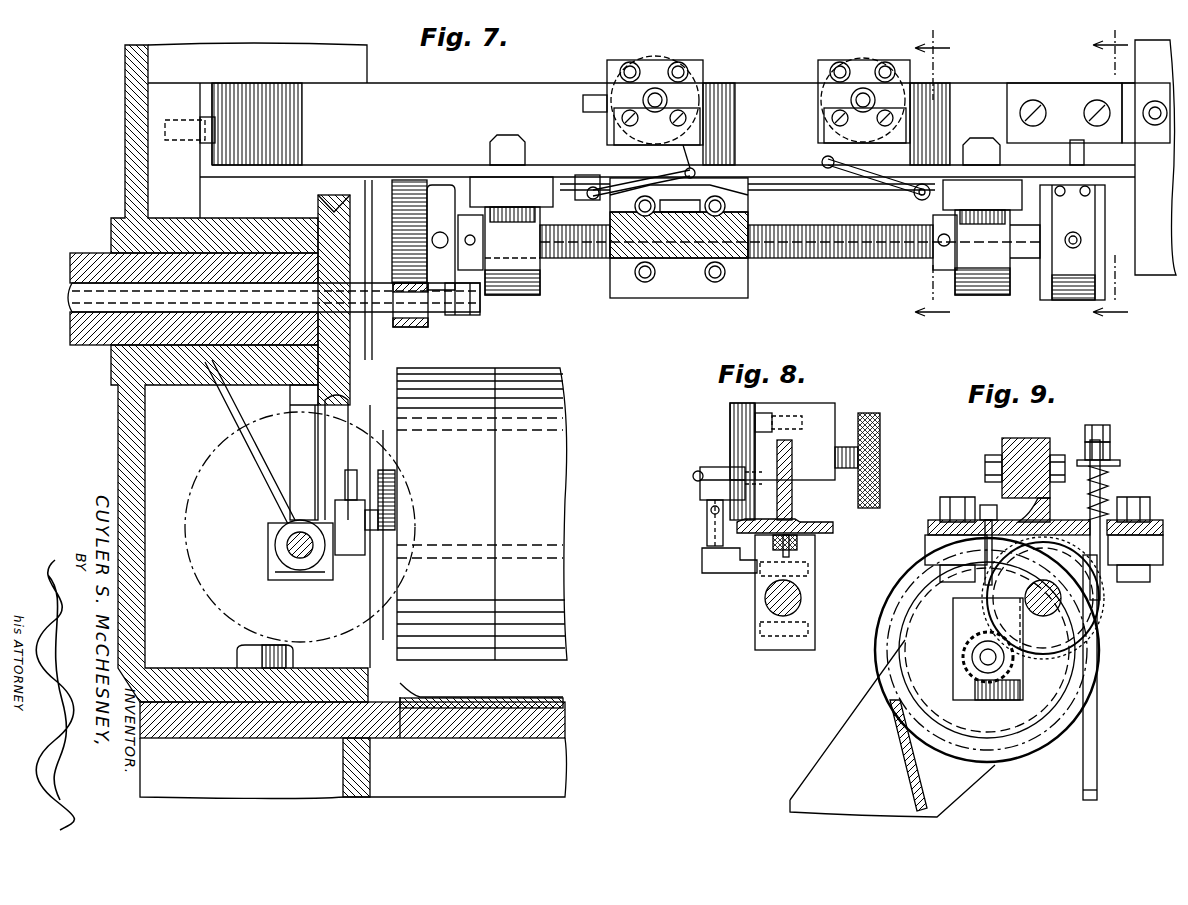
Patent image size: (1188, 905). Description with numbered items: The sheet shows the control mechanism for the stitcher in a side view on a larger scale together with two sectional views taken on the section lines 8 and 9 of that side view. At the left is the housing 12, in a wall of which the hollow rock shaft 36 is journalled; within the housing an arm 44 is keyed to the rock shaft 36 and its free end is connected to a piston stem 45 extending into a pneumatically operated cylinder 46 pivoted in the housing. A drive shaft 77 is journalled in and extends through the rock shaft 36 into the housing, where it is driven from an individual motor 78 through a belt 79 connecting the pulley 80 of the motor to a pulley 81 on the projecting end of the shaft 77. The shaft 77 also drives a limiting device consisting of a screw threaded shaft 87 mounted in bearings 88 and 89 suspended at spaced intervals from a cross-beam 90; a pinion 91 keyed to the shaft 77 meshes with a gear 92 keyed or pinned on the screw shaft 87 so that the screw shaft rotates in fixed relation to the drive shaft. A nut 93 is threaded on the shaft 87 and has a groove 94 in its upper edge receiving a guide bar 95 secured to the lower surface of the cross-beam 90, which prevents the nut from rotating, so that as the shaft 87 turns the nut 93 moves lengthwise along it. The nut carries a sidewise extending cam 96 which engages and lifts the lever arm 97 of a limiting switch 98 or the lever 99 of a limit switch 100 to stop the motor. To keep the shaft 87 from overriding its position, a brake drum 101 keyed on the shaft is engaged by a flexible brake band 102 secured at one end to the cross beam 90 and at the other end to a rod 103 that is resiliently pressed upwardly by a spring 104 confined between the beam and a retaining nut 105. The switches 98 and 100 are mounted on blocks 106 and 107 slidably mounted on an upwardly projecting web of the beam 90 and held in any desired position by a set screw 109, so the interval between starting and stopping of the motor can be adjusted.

In FIG. 7, the housing 12 is at (125, 135).
In FIG. 7, the hollow rock shaft 36 is at (70, 262).
In FIG. 7, the drive shaft 77 is at (70, 294).
In FIG. 9, the drive shaft 77 is at (975, 666).
In FIG. 7, the cross-beam 90 is at (416, 86).
In FIG. 8, the cross-beam 90 is at (838, 502).
In FIG. 9, the cross-beam 90 is at (1047, 440).
In FIG. 7, the pulley 81 is at (320, 402).
In FIG. 9, the pulley 81 is at (1090, 658).
In FIG. 7, the belt 79 is at (330, 434).
In FIG. 9, the belt 79 is at (1095, 722).
In FIG. 7, the gear 92 is at (402, 180).
In FIG. 9, the gear 92 is at (1040, 668).
In FIG. 7, the pinion 91 is at (428, 327).
In FIG. 9, the pinion 91 is at (965, 662).
In FIG. 7, the bearing 88 is at (530, 297).
In FIG. 7, the screw threaded shaft 87 is at (582, 260).
In FIG. 8, the screw threaded shaft 87 is at (765, 598).
In FIG. 7, the nut 93 is at (685, 298).
In FIG. 8, the nut 93 is at (820, 600).
In FIG. 9, the nut 93 is at (963, 630).
In FIG. 7, the cam 96 is at (672, 200).
In FIG. 8, the cam 96 is at (702, 565).
In FIG. 7, the block 107 is at (614, 63).
In FIG. 7, the limit switch 100 is at (648, 100).
In FIG. 7, the limiting switch 98 is at (893, 107).
In FIG. 8, the limiting switch 98 is at (752, 405).
In FIG. 7, the block 106 is at (893, 62).
In FIG. 7, the lever 99 is at (590, 185).
In FIG. 7, the guide bar 95 is at (828, 195).
In FIG. 8, the guide bar 95 is at (800, 540).
In FIG. 7, the lever arm 97 is at (912, 196).
In FIG. 8, the lever arm 97 is at (706, 532).
In FIG. 7, the bearing 89 is at (982, 298).
In FIG. 7, the brake drum 101 is at (1050, 297).
In FIG. 9, the brake drum 101 is at (1085, 598).
In FIG. 7, the flexible brake band 102 is at (1078, 300).
In FIG. 9, the flexible brake band 102 is at (1092, 622).
In FIG. 7, the section line 8— 8 is at (937, 178).
In FIG. 7, the section line 9— 9 is at (1116, 178).
In FIG. 7, the motor 78 is at (512, 660).
In FIG. 7, the arm 44 is at (297, 482).
In FIG. 7, the piston stem 45 is at (272, 546).
In FIG. 7, the pneumatically operated cylinder 46 is at (205, 590).
In FIG. 7, the pulley 80 is at (350, 565).
In FIG. 8, the set screw 109 is at (868, 413).
In FIG. 8, the groove 94 is at (798, 548).
In FIG. 9, the retaining nut 105 is at (1112, 450).
In FIG. 9, the spring 104 is at (1108, 478).
In FIG. 9, the rod 103 is at (1105, 502).